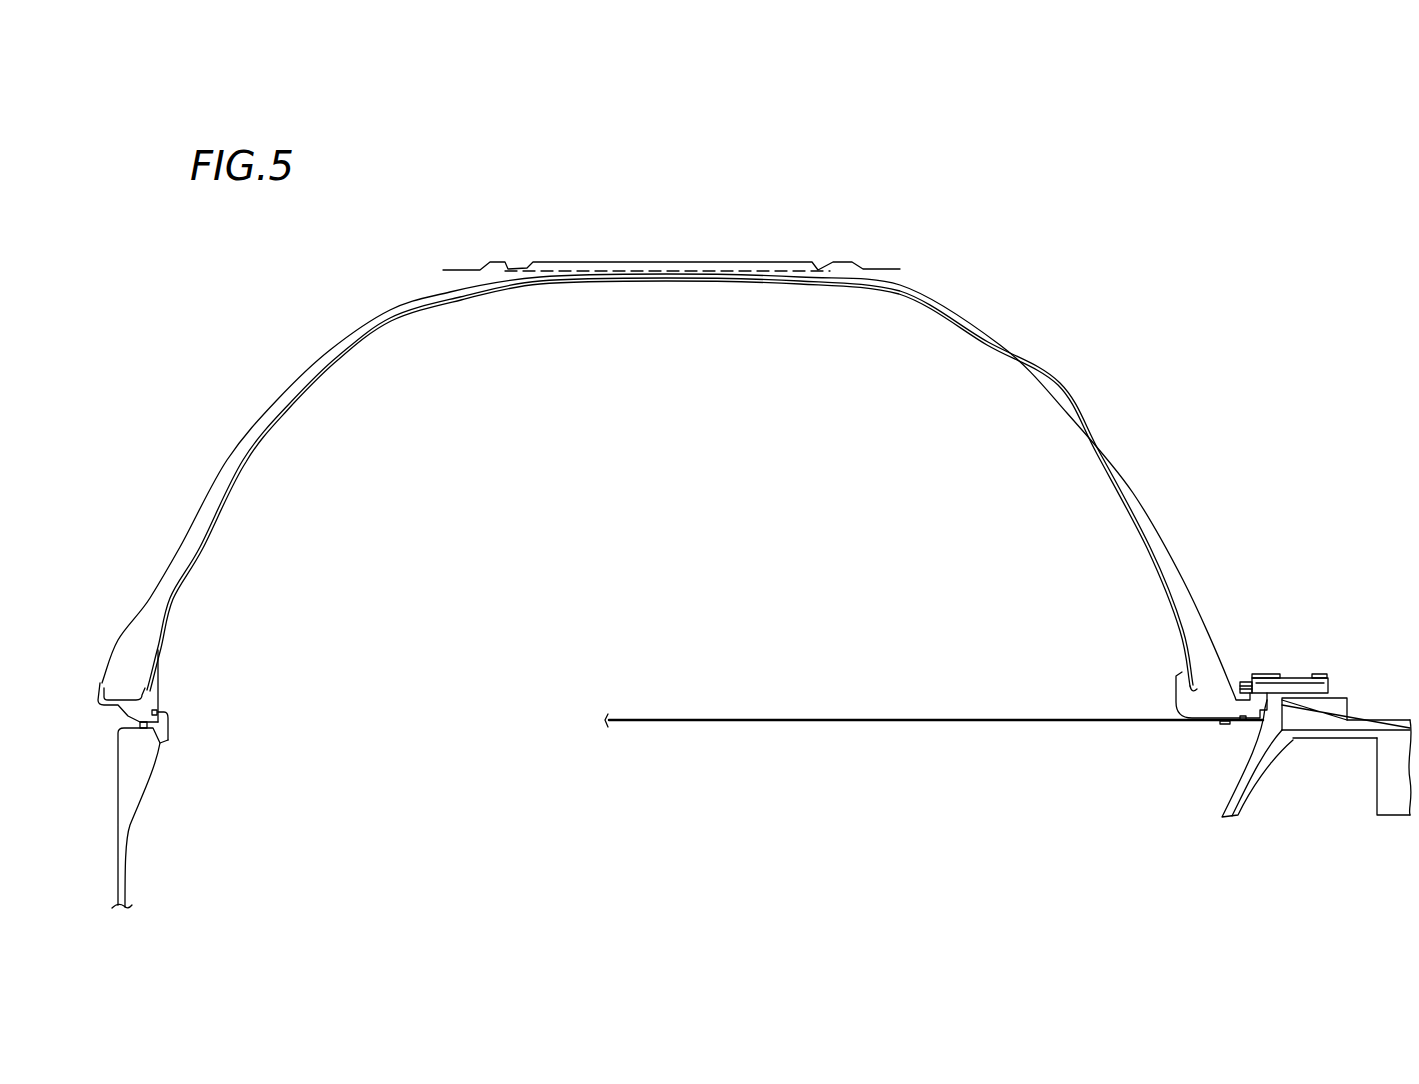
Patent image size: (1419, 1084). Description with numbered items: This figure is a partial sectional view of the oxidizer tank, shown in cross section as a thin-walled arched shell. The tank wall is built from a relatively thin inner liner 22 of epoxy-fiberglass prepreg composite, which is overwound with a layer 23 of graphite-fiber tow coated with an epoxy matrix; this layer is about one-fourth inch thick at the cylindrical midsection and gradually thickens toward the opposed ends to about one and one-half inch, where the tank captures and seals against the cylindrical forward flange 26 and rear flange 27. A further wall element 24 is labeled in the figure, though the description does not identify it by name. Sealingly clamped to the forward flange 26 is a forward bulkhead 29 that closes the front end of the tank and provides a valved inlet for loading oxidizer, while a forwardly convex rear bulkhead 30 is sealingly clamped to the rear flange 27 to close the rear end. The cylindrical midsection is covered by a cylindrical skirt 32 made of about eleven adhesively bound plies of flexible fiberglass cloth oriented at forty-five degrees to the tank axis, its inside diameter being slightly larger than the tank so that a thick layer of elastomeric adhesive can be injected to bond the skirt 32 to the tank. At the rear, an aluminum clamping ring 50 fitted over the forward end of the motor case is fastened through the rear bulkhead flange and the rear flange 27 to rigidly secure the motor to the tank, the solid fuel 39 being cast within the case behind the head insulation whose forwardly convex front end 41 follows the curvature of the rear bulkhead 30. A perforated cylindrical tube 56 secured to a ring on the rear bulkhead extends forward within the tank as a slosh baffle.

The inner liner 22 is at (988, 343).
The layer of graphite-fiber tow 23 is at (1054, 380).
The liner of arch 24 is at (750, 283).
The forward flange 26 is at (161, 673).
The rear flange 27 is at (1172, 692).
The forward bulkhead 29 is at (143, 777).
The rear bulkhead 30 is at (1232, 786).
The cylindrical skirt 32 is at (706, 262).
The solid fuel 39 is at (1397, 798).
The forwardly convex front end 41 is at (1290, 745).
The clamping ring 50 is at (1352, 712).
The perforated cylindrical tube 56 is at (981, 718).